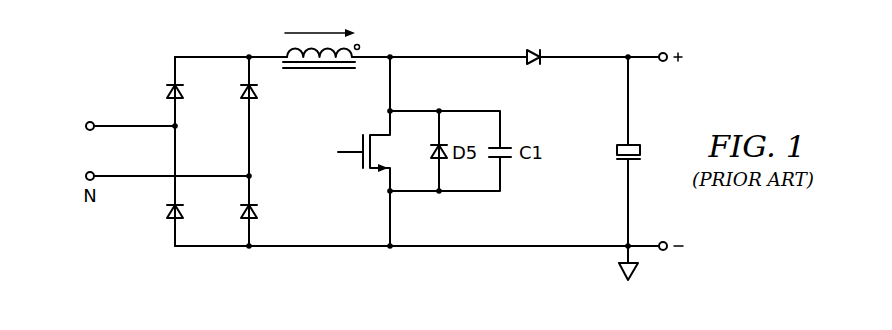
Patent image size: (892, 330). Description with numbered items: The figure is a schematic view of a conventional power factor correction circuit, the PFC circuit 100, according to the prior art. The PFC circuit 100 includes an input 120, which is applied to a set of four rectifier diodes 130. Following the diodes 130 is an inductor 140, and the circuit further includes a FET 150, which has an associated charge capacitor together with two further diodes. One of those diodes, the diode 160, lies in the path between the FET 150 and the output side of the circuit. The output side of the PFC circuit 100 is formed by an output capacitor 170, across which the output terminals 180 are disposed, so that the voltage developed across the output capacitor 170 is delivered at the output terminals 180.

The PFC circuit 100 is at (117, 54).
The input Vin 120 is at (86, 126).
The diodes D1-D4 130 is at (168, 209).
The inductor 140 is at (285, 50).
The FET Q1 150 is at (361, 159).
The diode D6 160 is at (533, 50).
The capacitor Co 170 is at (617, 150).
The output terminals 180 is at (667, 53).